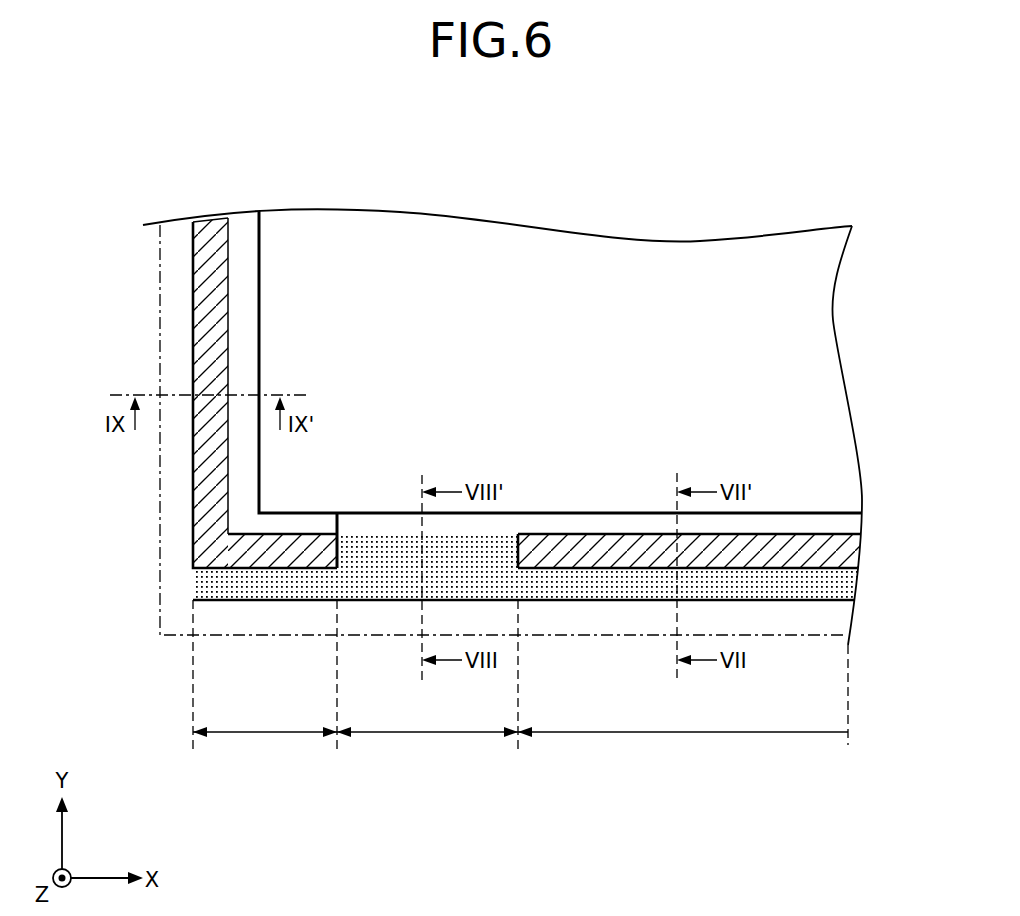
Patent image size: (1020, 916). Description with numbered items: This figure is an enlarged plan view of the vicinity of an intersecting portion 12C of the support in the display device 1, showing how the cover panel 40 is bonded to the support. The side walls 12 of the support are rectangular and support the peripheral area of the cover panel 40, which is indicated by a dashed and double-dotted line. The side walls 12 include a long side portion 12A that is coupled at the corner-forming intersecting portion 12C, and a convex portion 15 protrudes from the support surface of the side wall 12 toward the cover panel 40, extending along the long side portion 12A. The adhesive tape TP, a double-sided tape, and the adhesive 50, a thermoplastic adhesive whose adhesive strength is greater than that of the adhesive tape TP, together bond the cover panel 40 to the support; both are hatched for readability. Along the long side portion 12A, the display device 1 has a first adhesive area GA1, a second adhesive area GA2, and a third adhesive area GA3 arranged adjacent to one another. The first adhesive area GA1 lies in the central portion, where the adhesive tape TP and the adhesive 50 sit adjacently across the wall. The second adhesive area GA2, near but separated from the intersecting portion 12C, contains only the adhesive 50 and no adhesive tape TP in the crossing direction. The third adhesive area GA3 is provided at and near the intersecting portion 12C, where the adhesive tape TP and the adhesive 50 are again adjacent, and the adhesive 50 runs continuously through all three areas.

The display device 1 is at (885, 166).
The cover panel 40 is at (160, 251).
The side wall 12 is at (193, 290).
The long side portion 12A is at (560, 568).
The intersecting portion 12C is at (176, 547).
The convex portion 15 is at (337, 523).
The adhesive 50 is at (376, 600).
The adhesive tape TP is at (193, 358).
The first adhesive area GA1 is at (683, 747).
The second adhesive area GA2 is at (427, 747).
The third adhesive area GA3 is at (265, 747).